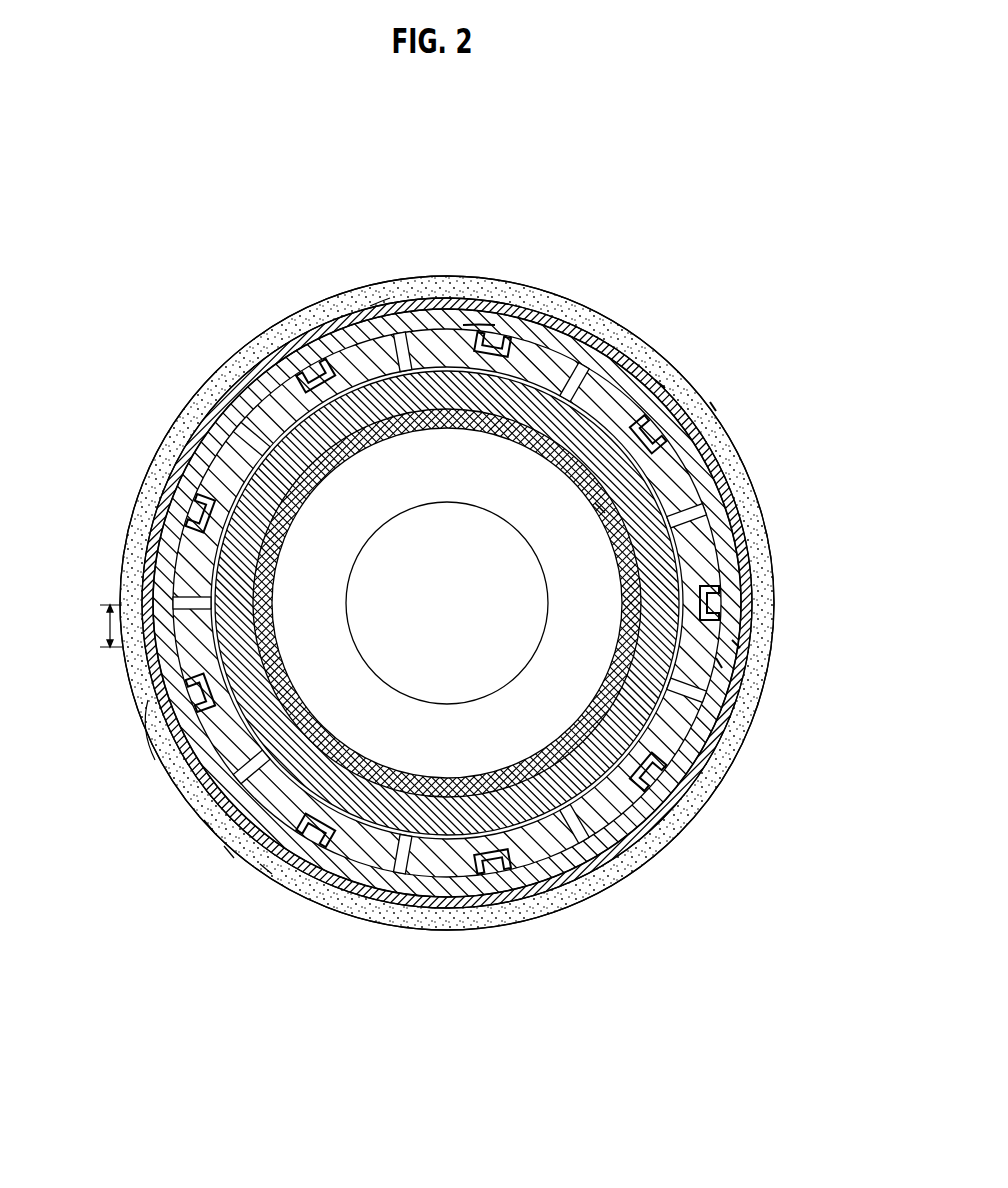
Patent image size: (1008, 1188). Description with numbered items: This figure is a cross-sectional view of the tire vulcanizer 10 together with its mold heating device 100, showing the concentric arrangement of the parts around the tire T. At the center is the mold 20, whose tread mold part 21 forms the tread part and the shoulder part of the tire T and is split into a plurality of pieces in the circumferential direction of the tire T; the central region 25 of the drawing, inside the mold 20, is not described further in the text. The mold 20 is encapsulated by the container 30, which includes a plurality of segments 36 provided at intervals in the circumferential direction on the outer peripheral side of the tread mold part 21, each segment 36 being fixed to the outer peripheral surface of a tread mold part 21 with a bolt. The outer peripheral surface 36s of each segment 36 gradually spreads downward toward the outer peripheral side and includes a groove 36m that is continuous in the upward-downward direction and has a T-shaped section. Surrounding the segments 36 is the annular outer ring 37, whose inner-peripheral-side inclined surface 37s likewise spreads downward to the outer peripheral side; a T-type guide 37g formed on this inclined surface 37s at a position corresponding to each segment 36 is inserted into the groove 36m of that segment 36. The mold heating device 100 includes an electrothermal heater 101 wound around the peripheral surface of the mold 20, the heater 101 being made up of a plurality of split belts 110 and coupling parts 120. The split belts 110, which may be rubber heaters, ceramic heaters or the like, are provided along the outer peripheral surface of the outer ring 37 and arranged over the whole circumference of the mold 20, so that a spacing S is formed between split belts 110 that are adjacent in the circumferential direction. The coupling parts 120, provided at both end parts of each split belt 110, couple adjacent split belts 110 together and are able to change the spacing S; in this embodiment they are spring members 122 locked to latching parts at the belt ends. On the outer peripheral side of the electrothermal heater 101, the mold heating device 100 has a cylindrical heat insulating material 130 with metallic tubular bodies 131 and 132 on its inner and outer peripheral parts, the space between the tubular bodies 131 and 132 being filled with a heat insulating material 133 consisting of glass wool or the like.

The tire vulcanizer 10 is at (689, 260).
The mold 20 is at (432, 345).
The tread mold part 21 is at (358, 830).
The shaft hole 25 is at (616, 606).
The container 30 is at (690, 400).
The segment 36 is at (412, 335).
The groove 36m is at (660, 384).
The outer peripheral surface 36s is at (520, 302).
The outer ring 37 is at (437, 906).
The T-type guide 37g is at (710, 410).
The inner-peripheral-side inclined surface 37s is at (478, 320).
The mold heating device 100 is at (238, 330).
The electrothermal heater 101 is at (372, 288).
The split belt 110 is at (489, 301).
The coupling part 120 is at (583, 313).
The spring member 122 is at (287, 357).
The heat insulating material 130 is at (150, 715).
The tubular body 131 is at (212, 823).
The tubular body 132 is at (230, 850).
The heat insulating material 133 is at (267, 868).
The spacing S is at (270, 350).
The tire T is at (592, 510).